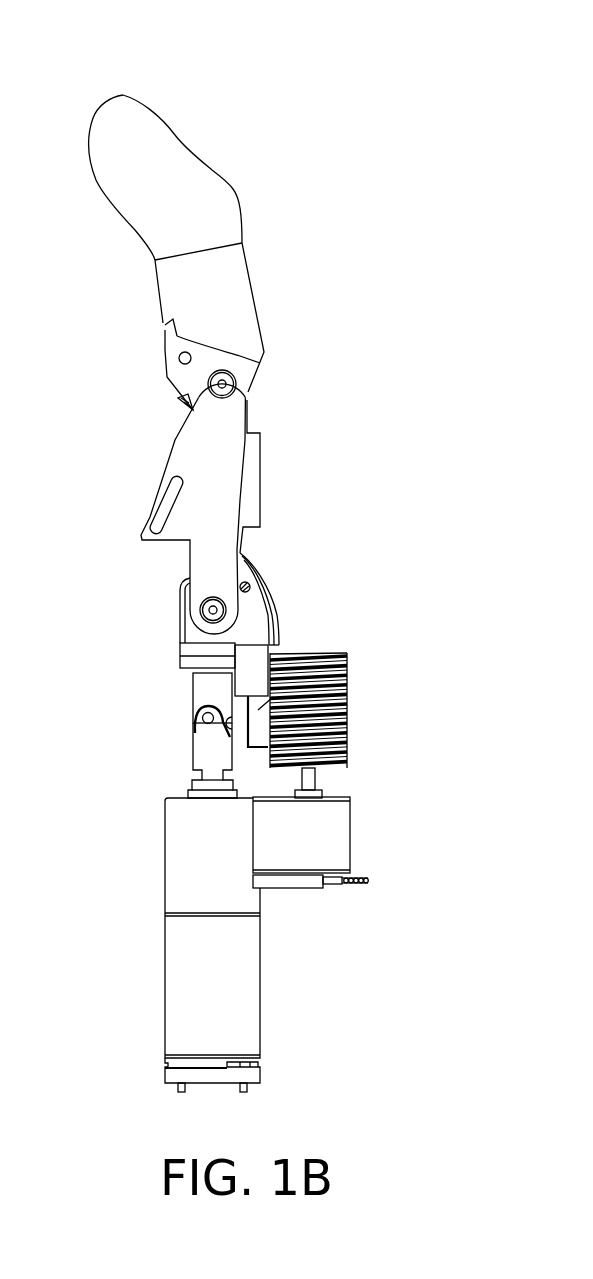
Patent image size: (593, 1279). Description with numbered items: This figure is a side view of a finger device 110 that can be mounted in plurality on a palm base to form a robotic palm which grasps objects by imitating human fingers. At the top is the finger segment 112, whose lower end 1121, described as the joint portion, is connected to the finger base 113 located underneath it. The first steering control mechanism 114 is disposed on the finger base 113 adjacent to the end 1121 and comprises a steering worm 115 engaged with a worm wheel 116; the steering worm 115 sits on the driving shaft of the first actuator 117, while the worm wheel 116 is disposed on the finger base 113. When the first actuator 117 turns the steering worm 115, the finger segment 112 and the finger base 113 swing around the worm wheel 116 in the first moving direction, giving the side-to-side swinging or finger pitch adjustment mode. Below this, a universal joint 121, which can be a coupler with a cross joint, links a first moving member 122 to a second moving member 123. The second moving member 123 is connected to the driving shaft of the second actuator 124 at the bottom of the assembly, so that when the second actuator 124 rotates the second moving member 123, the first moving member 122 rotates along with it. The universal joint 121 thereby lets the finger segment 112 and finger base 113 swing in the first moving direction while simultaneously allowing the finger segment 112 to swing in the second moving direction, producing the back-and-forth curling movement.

The finger device 110 is at (57, 51).
The finger segment 112 is at (213, 495).
The end 1121 is at (226, 598).
The finger base 113 is at (248, 629).
The first steering control mechanism 114 is at (426, 665).
The steering worm 115 is at (337, 710).
The worm wheel 116 is at (343, 690).
The first actuator 117 is at (312, 837).
The universal joint 121 is at (114, 685).
The first moving member 122 is at (203, 688).
The second moving member 123 is at (207, 752).
The second actuator 124 is at (230, 997).